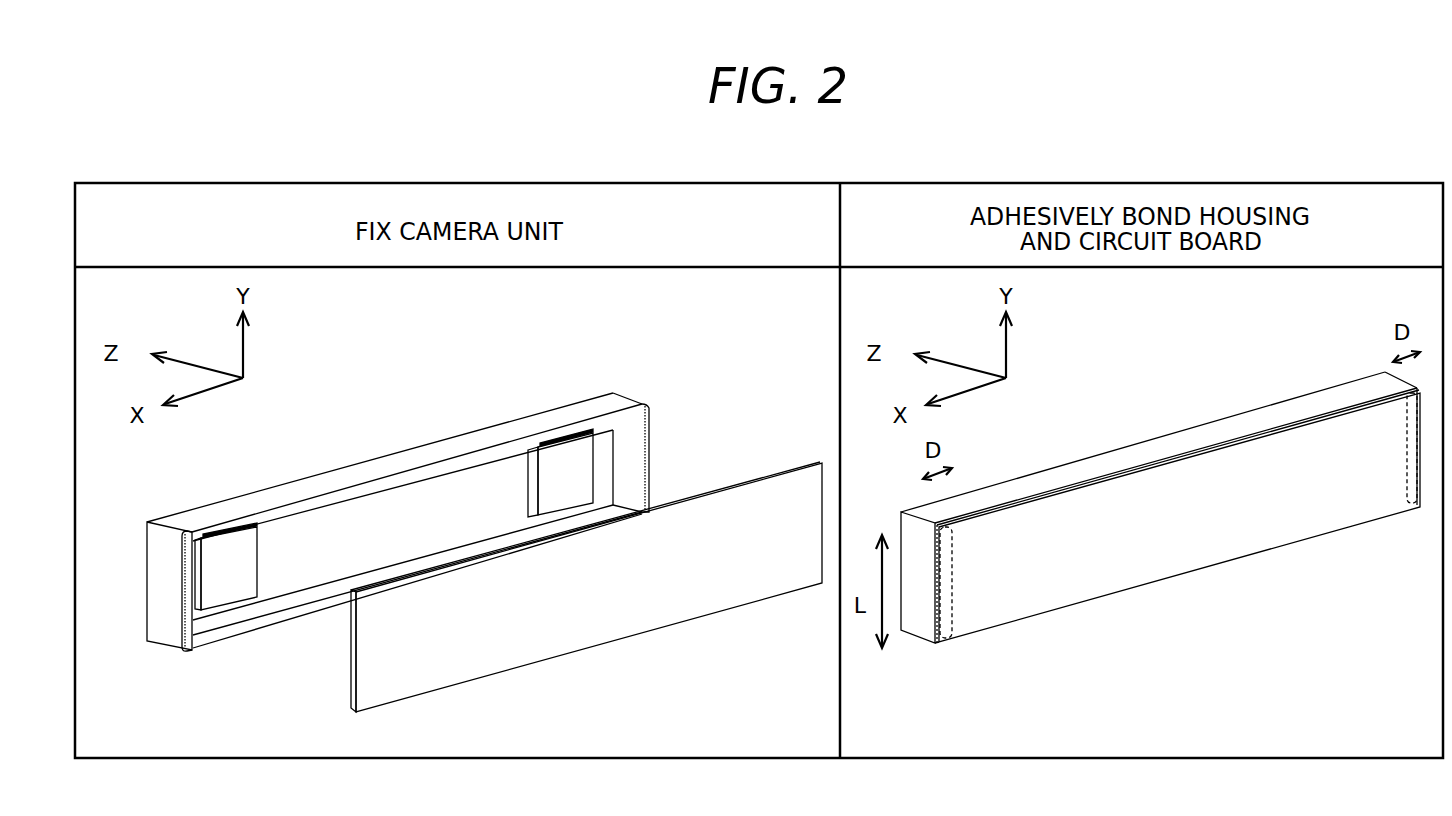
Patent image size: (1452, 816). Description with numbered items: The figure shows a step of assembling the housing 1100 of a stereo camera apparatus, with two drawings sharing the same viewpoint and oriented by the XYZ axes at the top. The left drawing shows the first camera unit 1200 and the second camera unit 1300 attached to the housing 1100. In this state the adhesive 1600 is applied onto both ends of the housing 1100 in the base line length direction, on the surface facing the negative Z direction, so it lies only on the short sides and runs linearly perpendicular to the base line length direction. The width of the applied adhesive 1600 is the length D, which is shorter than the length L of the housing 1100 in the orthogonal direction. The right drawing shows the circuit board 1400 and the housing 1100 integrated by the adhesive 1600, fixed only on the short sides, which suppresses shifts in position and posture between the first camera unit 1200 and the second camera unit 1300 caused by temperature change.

The housing 1100 is at (400, 457).
The first camera unit 1200 is at (575, 457).
The second camera unit 1300 is at (232, 550).
The circuit board 1400 is at (627, 620).
The adhesive 1600 is at (647, 455).